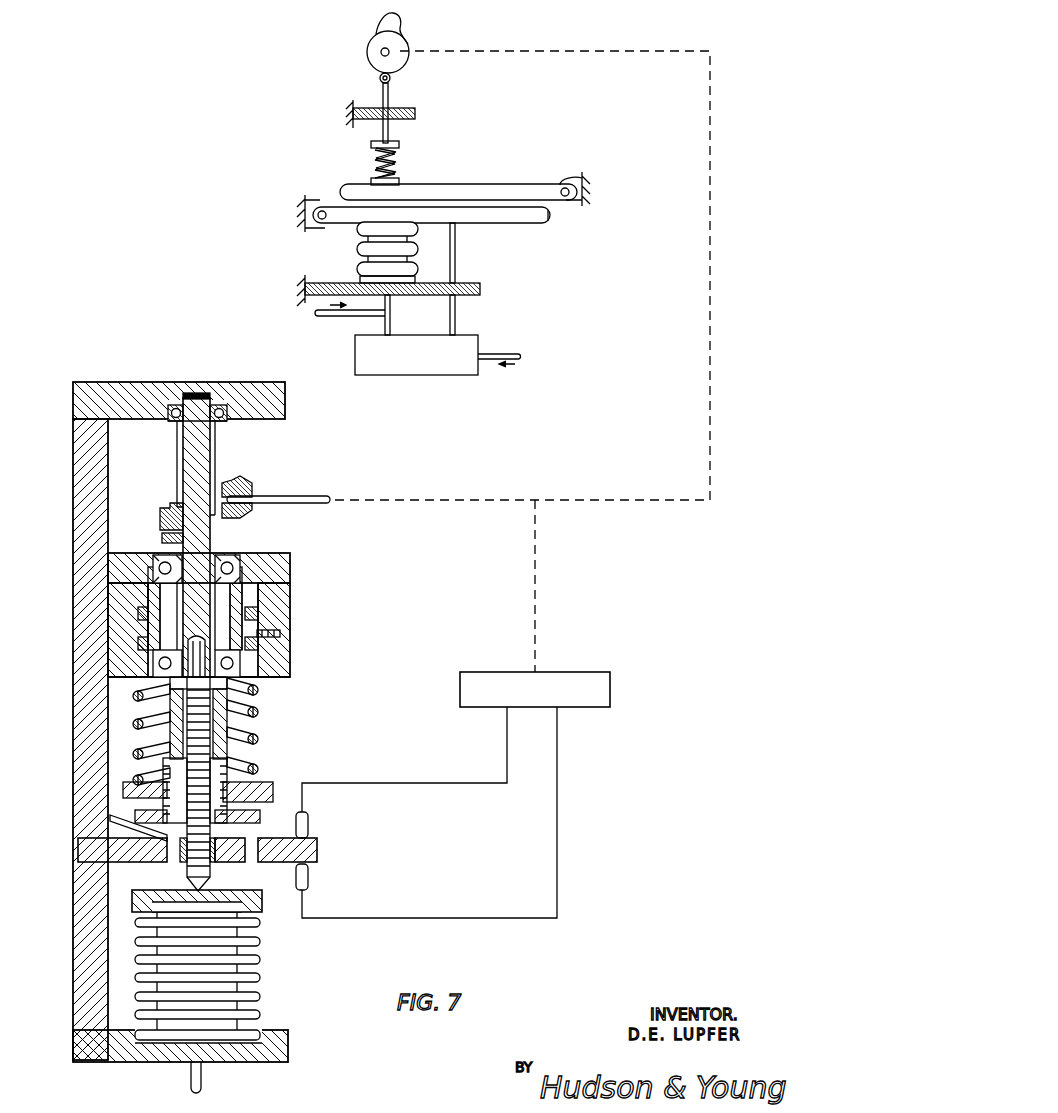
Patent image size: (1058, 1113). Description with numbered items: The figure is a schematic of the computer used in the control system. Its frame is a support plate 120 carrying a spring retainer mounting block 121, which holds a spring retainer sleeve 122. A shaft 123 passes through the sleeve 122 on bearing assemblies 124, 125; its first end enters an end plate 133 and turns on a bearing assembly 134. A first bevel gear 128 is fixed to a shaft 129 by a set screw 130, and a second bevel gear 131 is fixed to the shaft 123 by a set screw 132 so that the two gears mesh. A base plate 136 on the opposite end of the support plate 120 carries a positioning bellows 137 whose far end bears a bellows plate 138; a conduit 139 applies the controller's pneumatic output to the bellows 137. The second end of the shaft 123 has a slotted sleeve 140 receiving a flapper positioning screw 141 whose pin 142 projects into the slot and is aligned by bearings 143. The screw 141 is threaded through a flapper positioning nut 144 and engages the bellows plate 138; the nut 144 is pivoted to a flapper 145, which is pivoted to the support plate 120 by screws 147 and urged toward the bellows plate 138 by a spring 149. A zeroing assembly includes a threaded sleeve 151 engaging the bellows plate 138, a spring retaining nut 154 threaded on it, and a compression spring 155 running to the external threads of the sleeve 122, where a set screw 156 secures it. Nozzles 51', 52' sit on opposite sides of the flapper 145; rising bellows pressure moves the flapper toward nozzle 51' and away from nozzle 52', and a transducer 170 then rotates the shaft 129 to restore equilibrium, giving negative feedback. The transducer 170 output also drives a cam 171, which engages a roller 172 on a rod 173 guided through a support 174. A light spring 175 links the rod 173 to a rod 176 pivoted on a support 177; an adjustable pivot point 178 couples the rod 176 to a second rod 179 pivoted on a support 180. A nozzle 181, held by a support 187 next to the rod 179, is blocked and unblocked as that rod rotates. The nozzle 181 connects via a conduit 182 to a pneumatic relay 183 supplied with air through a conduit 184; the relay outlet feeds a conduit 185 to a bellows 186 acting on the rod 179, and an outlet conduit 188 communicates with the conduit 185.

The support plate 120 is at (73, 575).
The spring retainer mounting block 121 is at (283, 657).
The spring retainer sleeve 122 is at (160, 560).
The shaft 123 is at (183, 452).
The bearing assembly 124 is at (226, 560).
The bearing assembly 125 is at (245, 680).
The first bevel gear 128 is at (240, 483).
The shaft 129 is at (275, 497).
The set screw 130 is at (245, 510).
The second bevel gear 131 is at (165, 512).
The set screw 132 is at (165, 535).
The end plate 133 is at (118, 383).
The bearing assembly 134 is at (228, 420).
The base plate 136 is at (148, 1063).
The positioning bellows 137 is at (256, 998).
The bellows plate 138 is at (262, 905).
The conduit 139 is at (203, 1075).
The slotted sleeve 140 is at (155, 712).
The flapper positioning screw 141 is at (190, 882).
The pin 142 is at (255, 705).
The bearings 143 is at (170, 686).
The flapper positioning nut 144 is at (228, 864).
The flapper 145 is at (318, 850).
The screws 147 is at (80, 855).
The spring 149 is at (110, 820).
The threaded sleeve 151 is at (155, 744).
The spring retaining nut 154 is at (150, 776).
The compression spring 155 is at (255, 722).
The set screw 156 is at (275, 640).
The nozzle 51' is at (318, 817).
The nozzle 52' is at (324, 877).
The transducer 170 is at (608, 700).
The cam 171 is at (405, 40).
The roller 172 is at (392, 78).
The rod 173 is at (390, 130).
The support 174 is at (412, 112).
The light spring 175 is at (398, 156).
The rod 176 is at (458, 185).
The support 177 is at (560, 182).
The adjustable pivot point 178 is at (490, 215).
The second rod 179 is at (548, 222).
The support 180 is at (325, 200).
The nozzle 181 is at (455, 228).
The conduit 182 is at (455, 305).
The pneumatic relay 183 is at (355, 352).
The conduit 184 is at (522, 356).
The conduit 185 is at (390, 305).
The bellows 186 is at (360, 242).
The support 187 is at (460, 288).
The outlet conduit 188 is at (345, 318).